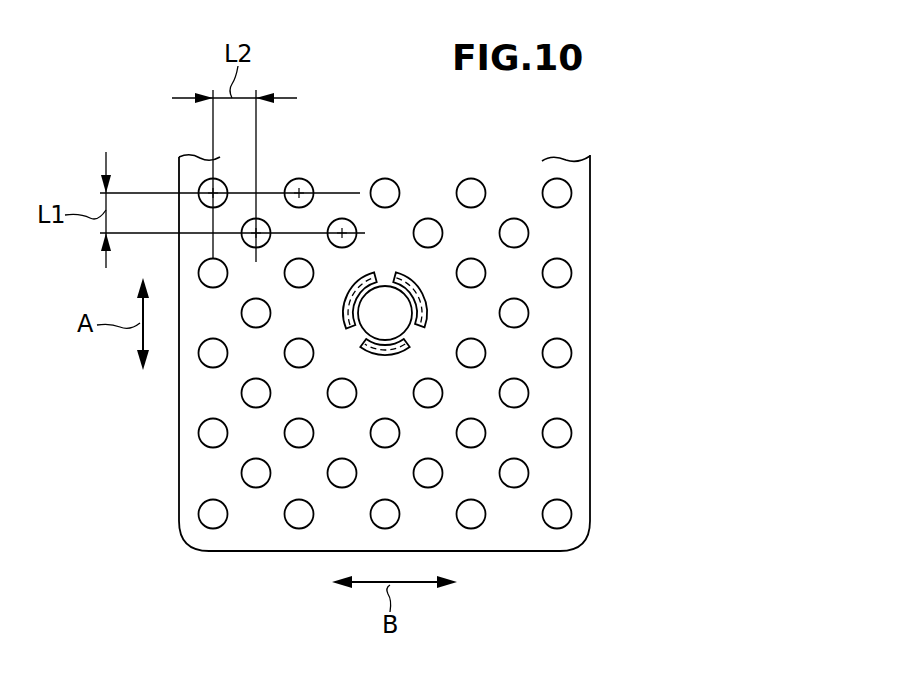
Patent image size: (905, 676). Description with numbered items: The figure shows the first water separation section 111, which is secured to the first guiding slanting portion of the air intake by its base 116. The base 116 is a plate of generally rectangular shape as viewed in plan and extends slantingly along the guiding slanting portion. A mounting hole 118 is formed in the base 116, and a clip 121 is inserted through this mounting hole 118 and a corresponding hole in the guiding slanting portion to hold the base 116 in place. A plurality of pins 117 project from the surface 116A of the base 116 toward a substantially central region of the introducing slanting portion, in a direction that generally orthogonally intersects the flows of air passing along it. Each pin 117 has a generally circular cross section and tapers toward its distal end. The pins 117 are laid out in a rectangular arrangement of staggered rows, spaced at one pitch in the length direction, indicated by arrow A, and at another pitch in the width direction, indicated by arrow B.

The first water separation section 111 is at (713, 195).
The base 116 is at (577, 212).
The surface of the base 116A is at (212, 401).
The pins 117 is at (518, 390).
The mounting hole 118 is at (410, 318).
The clip 121 is at (425, 297).